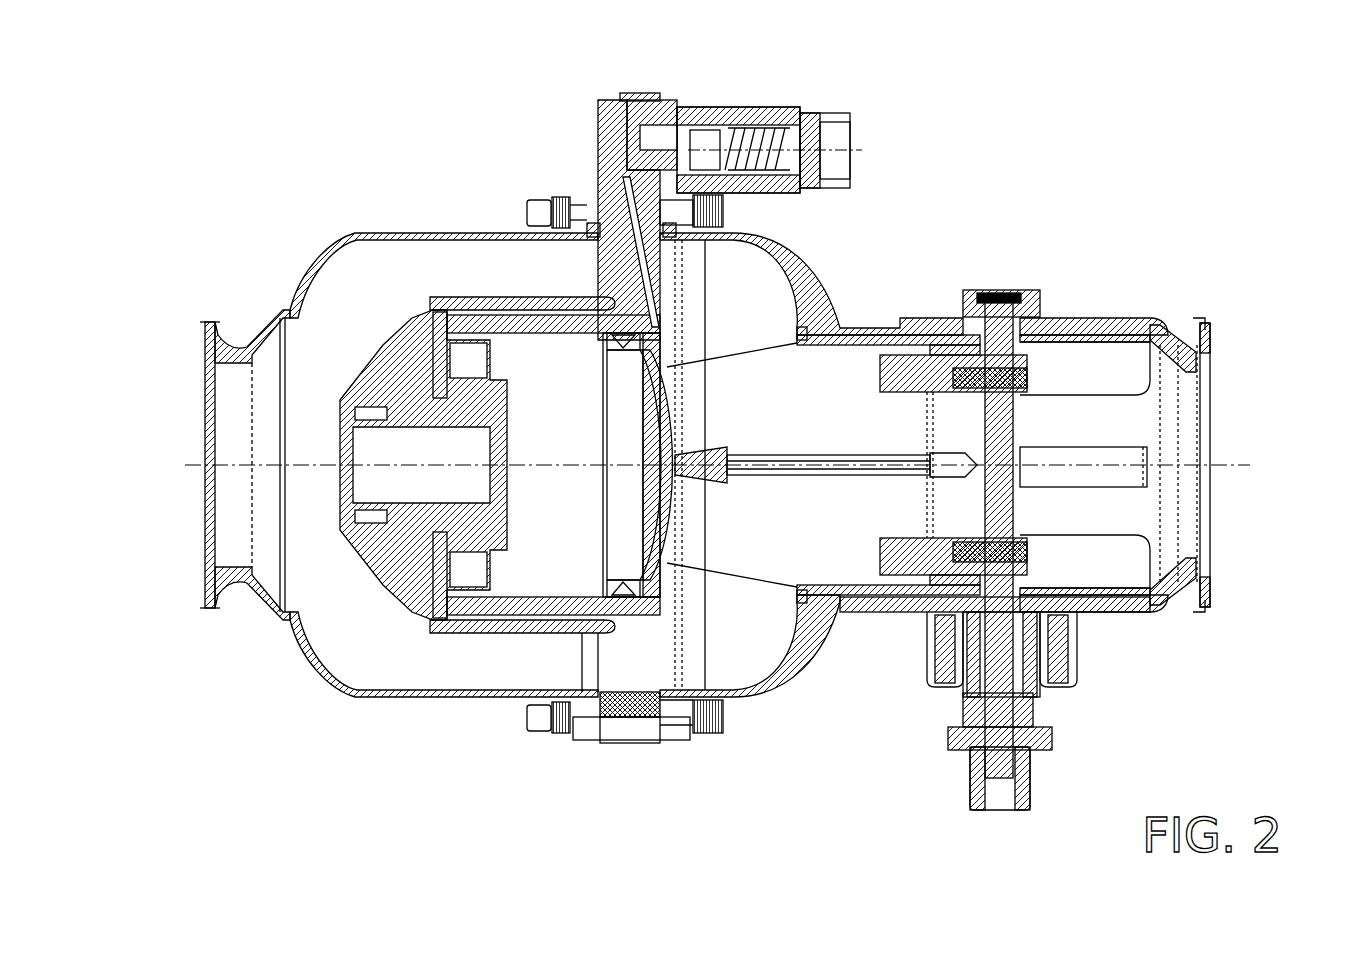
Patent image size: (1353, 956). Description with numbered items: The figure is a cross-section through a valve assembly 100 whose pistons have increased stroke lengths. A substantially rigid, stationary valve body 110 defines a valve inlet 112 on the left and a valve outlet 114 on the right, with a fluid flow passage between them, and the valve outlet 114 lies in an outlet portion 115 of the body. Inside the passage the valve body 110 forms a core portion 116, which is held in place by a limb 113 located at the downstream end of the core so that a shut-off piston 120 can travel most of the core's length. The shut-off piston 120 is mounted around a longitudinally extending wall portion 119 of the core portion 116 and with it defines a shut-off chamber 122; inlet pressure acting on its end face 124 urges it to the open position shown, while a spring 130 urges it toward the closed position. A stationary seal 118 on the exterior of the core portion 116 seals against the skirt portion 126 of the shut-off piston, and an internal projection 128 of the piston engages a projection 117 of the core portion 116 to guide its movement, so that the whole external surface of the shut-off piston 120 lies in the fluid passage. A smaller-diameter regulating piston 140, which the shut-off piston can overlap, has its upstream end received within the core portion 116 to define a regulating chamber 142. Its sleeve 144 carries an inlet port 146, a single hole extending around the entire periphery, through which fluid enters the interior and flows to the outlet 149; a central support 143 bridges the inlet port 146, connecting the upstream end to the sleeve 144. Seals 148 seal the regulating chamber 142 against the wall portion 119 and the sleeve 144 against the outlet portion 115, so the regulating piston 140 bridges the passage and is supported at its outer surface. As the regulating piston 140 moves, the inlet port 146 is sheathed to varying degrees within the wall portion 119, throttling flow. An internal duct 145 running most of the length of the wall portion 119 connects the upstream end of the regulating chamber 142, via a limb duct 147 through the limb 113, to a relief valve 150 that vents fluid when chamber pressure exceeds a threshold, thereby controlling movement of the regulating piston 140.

The valve assembly 100 is at (240, 160).
The valve body 110 is at (354, 232).
The valve inlet 112 is at (203, 412).
The limb 113 is at (600, 150).
The valve outlet 114 is at (1212, 392).
The outlet portion 115 is at (1078, 318).
The core portion 116 is at (473, 618).
The projection 117 is at (332, 616).
The seal 118 is at (462, 296).
The wall portion 119 is at (566, 735).
The shut-off piston 120 is at (408, 318).
The shut-off chamber 122 is at (284, 476).
The end face 124 is at (292, 322).
The skirt portion 126 is at (510, 314).
The internal projection 128 is at (368, 622).
The spring 130 is at (412, 620).
The regulating piston 140 is at (736, 332).
The regulating chamber 142 is at (625, 715).
The support 143 is at (900, 330).
The sleeve 144 is at (822, 604).
The internal duct 145 is at (558, 196).
The inlet port 146 is at (723, 596).
The limb duct 147 is at (622, 100).
The seals 148 is at (662, 330).
The outlet 149 is at (1152, 505).
The relief valve 150 is at (742, 108).